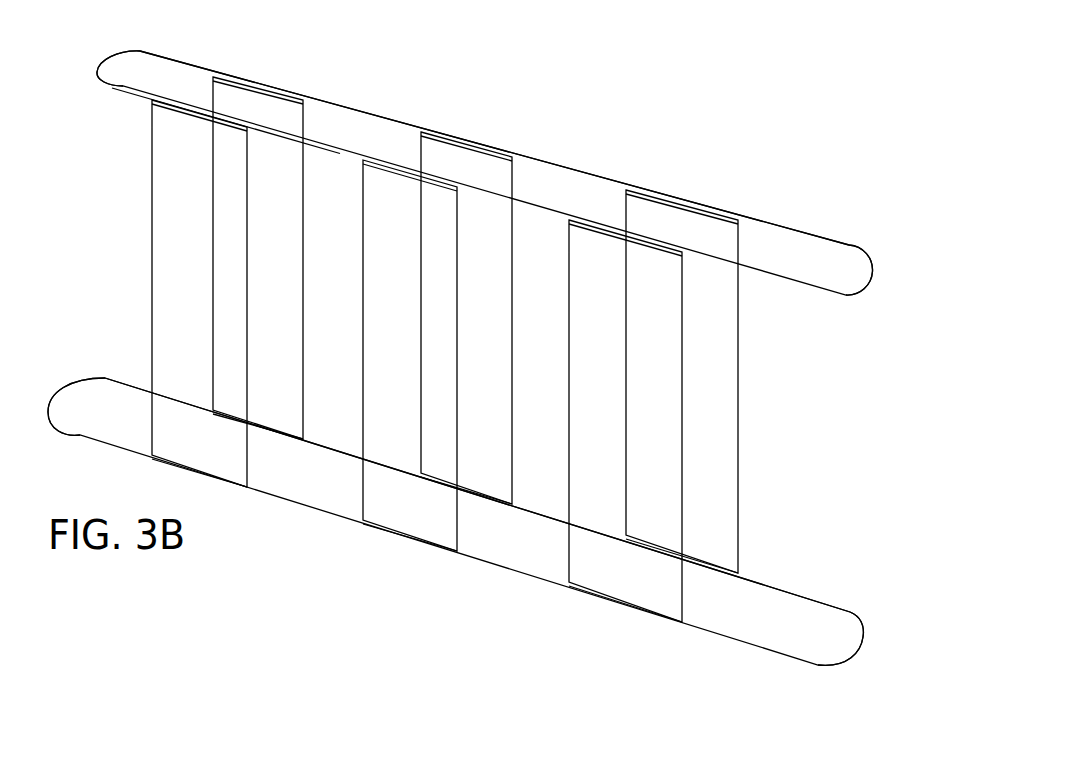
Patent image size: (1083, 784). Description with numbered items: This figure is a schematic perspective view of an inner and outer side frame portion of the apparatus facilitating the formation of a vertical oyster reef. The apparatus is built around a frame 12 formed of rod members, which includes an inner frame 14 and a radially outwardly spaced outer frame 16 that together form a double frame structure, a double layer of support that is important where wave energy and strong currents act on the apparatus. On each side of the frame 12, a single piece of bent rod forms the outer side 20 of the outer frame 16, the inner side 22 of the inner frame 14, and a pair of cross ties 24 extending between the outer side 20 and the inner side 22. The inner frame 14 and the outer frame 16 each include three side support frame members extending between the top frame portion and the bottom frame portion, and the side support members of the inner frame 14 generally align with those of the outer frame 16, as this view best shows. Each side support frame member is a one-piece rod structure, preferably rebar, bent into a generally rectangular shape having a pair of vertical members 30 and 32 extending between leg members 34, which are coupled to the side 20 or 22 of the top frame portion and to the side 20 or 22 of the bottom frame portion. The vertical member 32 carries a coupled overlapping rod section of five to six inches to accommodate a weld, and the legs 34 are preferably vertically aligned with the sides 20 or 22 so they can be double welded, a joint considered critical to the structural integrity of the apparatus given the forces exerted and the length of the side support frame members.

The frame 12 is at (481, 332).
The inner frame 14 is at (485, 164).
The outer frame 16 is at (455, 474).
The outer side 20 is at (460, 332).
The inner side 22 is at (477, 331).
The cross ties 24 is at (481, 336).
The vertical member 30 is at (394, 361).
The vertical member 32 is at (477, 325).
The leg members 34 is at (445, 351).